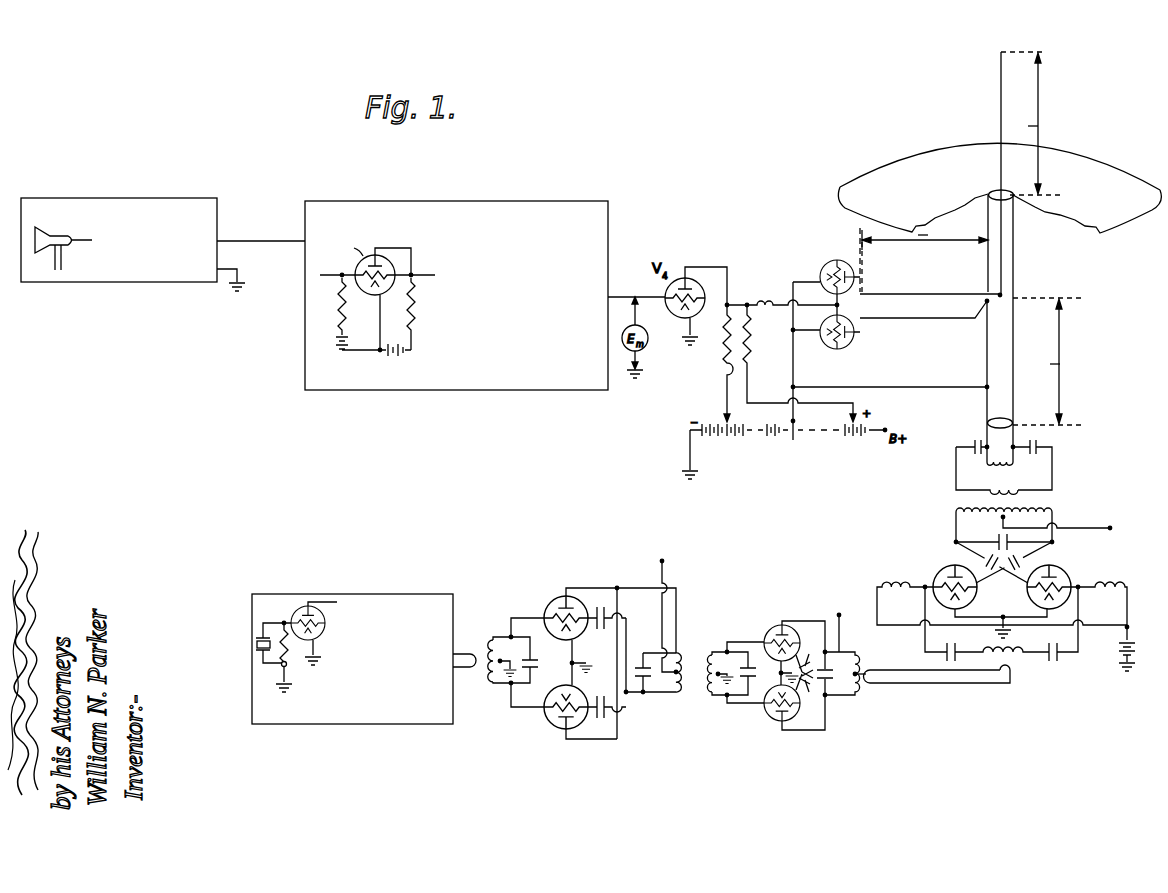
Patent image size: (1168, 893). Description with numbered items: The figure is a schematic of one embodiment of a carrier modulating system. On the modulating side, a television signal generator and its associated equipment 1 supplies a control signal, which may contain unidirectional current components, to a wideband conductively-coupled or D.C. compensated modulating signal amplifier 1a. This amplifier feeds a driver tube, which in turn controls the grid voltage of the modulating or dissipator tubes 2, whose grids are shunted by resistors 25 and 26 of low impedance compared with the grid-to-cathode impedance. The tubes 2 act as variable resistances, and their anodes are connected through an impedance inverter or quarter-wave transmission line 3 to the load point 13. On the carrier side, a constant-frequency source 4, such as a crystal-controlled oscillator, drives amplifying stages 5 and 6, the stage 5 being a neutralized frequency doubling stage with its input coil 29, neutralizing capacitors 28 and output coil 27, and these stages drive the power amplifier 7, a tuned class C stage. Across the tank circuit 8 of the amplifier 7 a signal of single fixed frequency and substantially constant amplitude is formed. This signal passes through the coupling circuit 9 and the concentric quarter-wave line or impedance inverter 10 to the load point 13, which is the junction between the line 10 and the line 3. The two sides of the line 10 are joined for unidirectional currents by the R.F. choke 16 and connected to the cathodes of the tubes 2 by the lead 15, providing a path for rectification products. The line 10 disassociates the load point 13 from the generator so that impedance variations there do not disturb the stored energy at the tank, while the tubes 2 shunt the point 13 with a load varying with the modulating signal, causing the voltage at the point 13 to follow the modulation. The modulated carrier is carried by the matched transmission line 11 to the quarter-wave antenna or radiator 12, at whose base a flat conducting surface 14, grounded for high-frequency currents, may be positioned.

The television signal generator 1 is at (163, 235).
The modulating signal amplifier 1a is at (485, 284).
The modulating or dissipator tubes 2 is at (828, 263).
The impedance inverter or quarter-wave transmission line 3 is at (924, 307).
The source of signal having a constant frequency 4 is at (388, 598).
The amplifying stage 5 is at (582, 639).
The amplifying stage 6 is at (786, 662).
The power amplifier 7 is at (1008, 608).
The tank circuit 8 is at (1044, 518).
The coupling circuit 9 is at (1018, 467).
The quarter-wave transmission line or impedance inverter 10 is at (1014, 367).
The transmission line 11 is at (1016, 249).
The antenna or radiator 12 is at (1000, 108).
The load point 13 is at (1003, 296).
The disc counterpoise 14 is at (914, 162).
The lead 15 is at (893, 387).
The R. F. choke 16 is at (998, 473).
The resistor 25 is at (727, 343).
The resistor 26 is at (750, 341).
The tank coil 27 is at (678, 693).
The neutralizing capacitors 28 is at (607, 614).
The input coil 29 is at (495, 640).